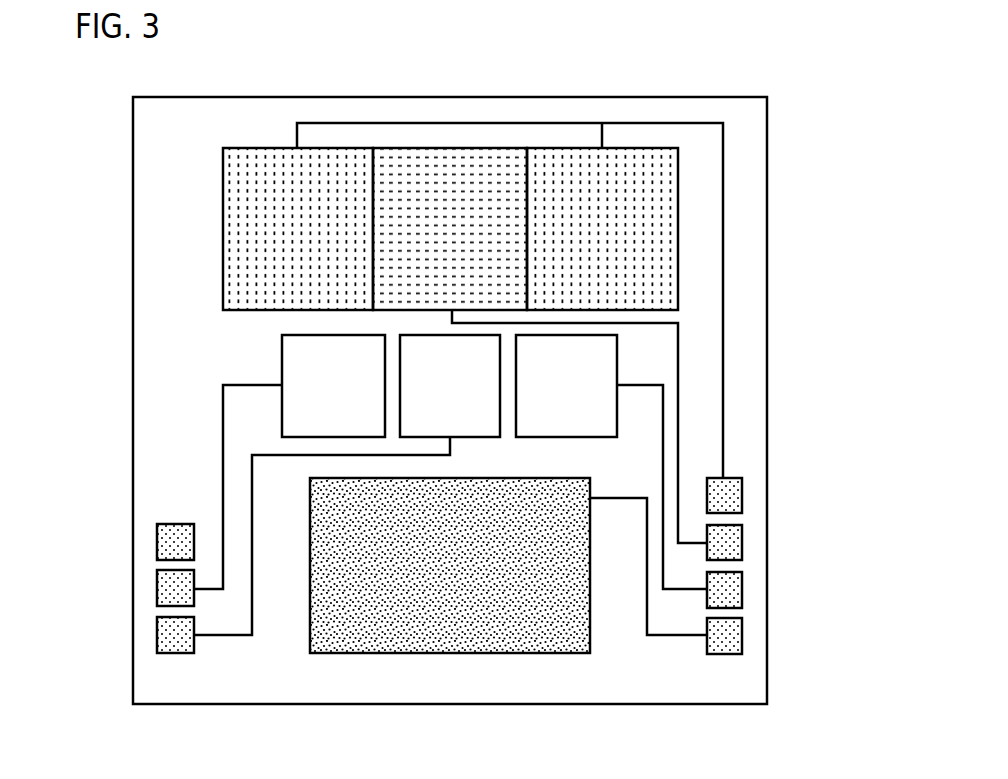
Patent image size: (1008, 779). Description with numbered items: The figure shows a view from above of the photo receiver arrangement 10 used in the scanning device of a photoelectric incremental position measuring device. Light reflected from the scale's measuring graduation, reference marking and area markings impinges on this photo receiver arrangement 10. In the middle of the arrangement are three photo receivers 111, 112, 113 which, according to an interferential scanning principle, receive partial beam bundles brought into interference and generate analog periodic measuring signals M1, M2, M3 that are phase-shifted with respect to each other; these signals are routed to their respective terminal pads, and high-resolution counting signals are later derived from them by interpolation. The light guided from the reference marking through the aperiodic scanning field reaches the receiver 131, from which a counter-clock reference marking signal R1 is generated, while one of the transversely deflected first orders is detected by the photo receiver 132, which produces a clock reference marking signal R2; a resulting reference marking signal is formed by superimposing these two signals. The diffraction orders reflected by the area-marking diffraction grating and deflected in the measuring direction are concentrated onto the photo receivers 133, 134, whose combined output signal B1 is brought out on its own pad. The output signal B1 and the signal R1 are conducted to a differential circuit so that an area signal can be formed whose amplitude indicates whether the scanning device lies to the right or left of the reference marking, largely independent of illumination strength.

The photo receiver arrangement 10 is at (657, 96).
The photo receiver 111 is at (333, 386).
The photo receiver 112 is at (450, 386).
The photo receiver 113 is at (566, 386).
The receiver 131 is at (417, 177).
The photo receiver 132 is at (543, 635).
The photo receiver 133 is at (262, 182).
The photo receiver 134 is at (565, 177).
The output signal B1 is at (723, 328).
The counter-clock reference marking signal R1 is at (678, 393).
The clock reference marking signal R2 is at (673, 640).
The analog periodic measuring signal M1 is at (223, 423).
The analog periodic measuring signal M2 is at (252, 507).
The analog periodic measuring signal M3 is at (663, 450).